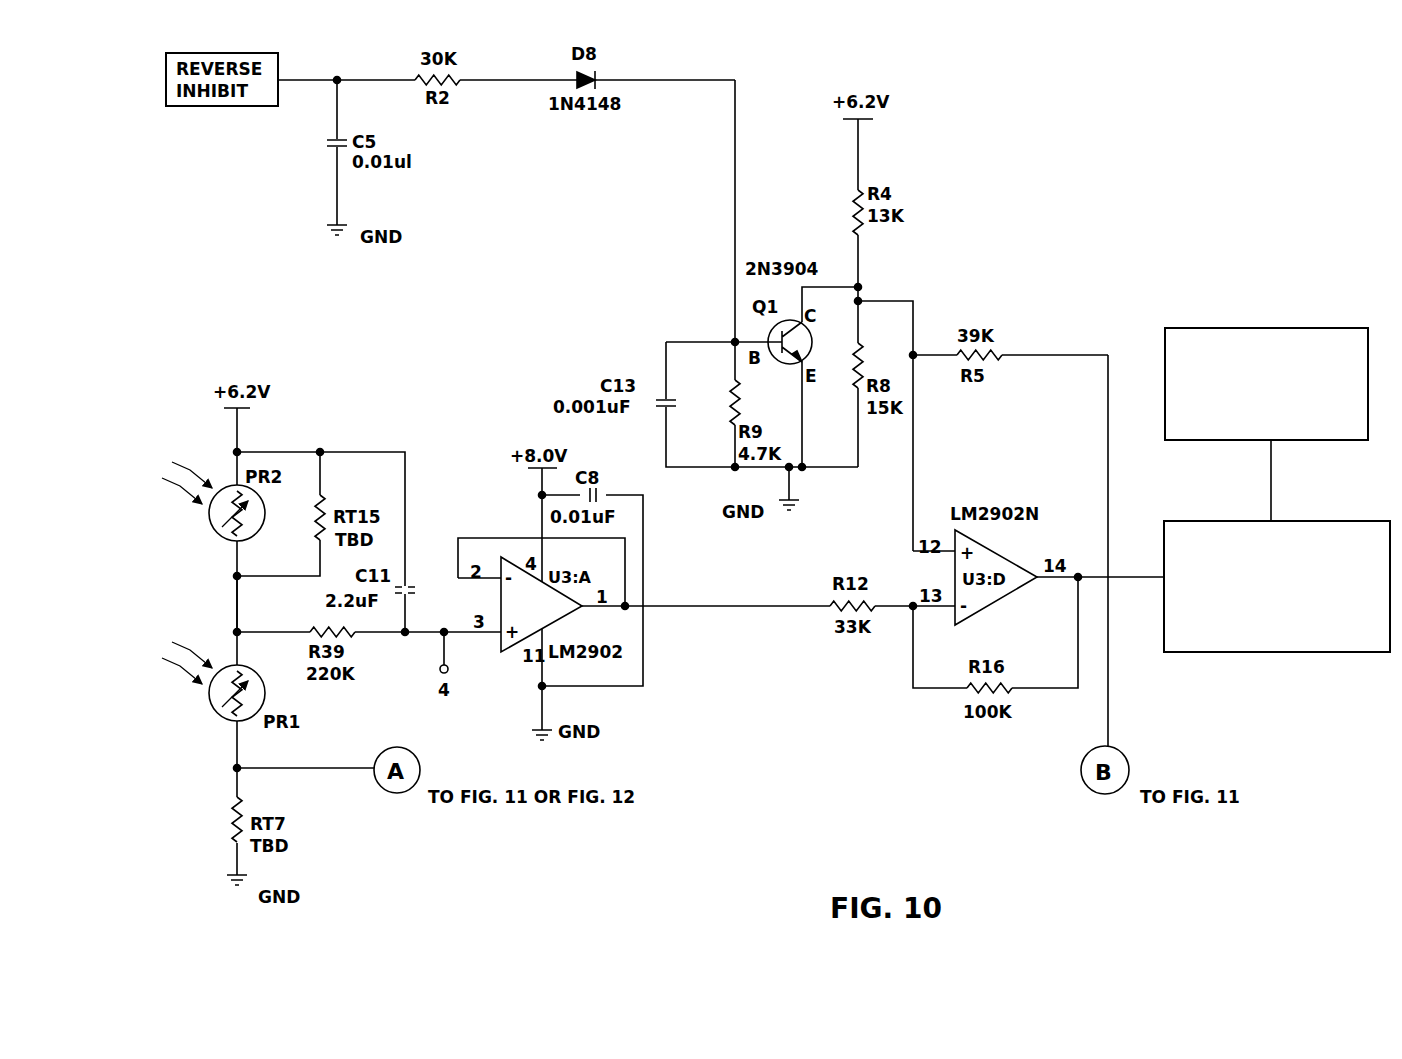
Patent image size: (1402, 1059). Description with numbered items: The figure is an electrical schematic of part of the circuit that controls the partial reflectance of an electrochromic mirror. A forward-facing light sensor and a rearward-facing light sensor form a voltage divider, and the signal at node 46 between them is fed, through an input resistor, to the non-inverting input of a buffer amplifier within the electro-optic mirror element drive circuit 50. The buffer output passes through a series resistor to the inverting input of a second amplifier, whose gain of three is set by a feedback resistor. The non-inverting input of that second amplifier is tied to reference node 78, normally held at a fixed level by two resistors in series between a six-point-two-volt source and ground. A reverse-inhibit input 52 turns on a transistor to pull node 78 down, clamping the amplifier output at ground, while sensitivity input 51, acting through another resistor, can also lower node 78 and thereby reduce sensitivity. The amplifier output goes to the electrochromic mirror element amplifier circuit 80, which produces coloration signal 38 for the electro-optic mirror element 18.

The electro-optic mirror element 18 is at (1322, 328).
The coloration signal 38 is at (1271, 478).
The node 46 is at (237, 590).
The electro-optic mirror element drive circuit 50 is at (761, 582).
The sensitivity input 51 is at (1108, 404).
The reverse-inhibit input 52 is at (735, 197).
The reference node 78 is at (913, 301).
The electrochromic mirror element amplifier circuit 80 is at (1336, 652).